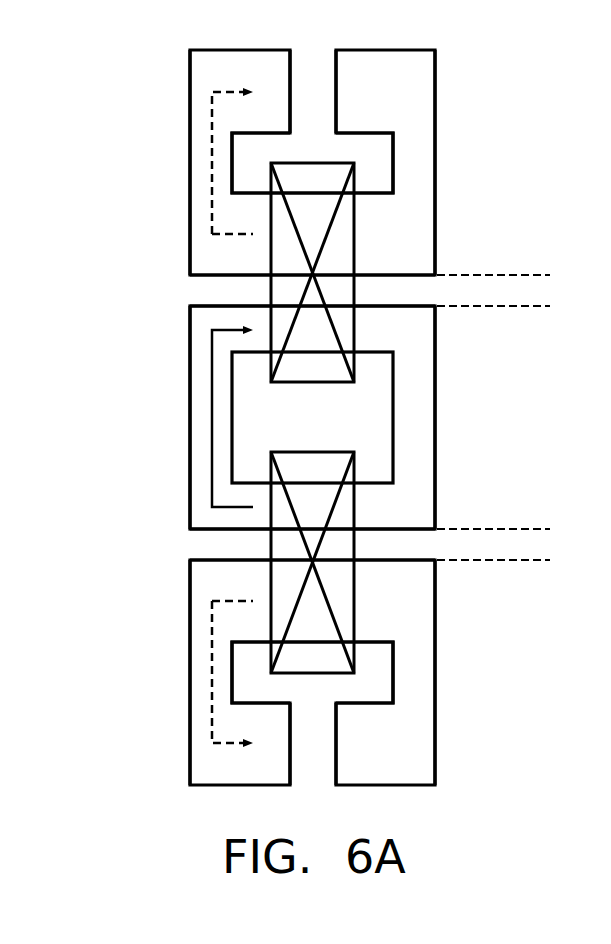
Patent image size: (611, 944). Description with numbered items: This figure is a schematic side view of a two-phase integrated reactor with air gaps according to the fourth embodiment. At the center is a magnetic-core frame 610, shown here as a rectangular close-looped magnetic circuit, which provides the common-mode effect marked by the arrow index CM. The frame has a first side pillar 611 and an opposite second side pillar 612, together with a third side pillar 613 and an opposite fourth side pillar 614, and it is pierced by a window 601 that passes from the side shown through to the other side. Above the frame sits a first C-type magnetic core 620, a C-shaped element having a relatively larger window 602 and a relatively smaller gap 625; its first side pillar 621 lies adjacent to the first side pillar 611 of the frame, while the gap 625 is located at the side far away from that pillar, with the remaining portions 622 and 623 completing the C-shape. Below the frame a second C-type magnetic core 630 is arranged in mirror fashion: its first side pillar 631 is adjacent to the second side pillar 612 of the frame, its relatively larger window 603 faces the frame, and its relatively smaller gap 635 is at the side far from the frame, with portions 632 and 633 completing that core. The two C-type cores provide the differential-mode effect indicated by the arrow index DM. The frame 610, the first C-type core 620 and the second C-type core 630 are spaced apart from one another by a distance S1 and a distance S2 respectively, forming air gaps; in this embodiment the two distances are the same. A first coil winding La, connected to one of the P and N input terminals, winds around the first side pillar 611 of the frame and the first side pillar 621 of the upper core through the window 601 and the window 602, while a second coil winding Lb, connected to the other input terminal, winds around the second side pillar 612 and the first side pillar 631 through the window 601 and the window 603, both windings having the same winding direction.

The first C-type magnetic core 620 is at (182, 66).
The gap 625 is at (325, 75).
The side portion of first magnetic element 623 is at (425, 163).
The first side pillar 621 is at (370, 240).
The side portion of first magnetic element 622 is at (197, 165).
The window 602 is at (255, 150).
The differential-mode effect DM is at (212, 212).
The first coil winding La is at (312, 163).
The magnetic-core frame 610 is at (182, 321).
The first side pillar 611 is at (370, 325).
The second side pillar 612 is at (370, 504).
The third side pillar 613 is at (197, 420).
The fourth side pillar 614 is at (425, 418).
The window 601 is at (255, 404).
The common-mode effect CM is at (212, 480).
The second coil winding Lb is at (312, 673).
The second C-type magnetic core 630 is at (182, 576).
The first side pillar 631 is at (370, 597).
The side portion of third magnetic element 632 is at (197, 675).
The side portion of third magnetic element 633 is at (425, 670).
The gap 635 is at (325, 757).
The window 603 is at (255, 658).
The distance S1 is at (546, 233).
The distance S2 is at (546, 487).